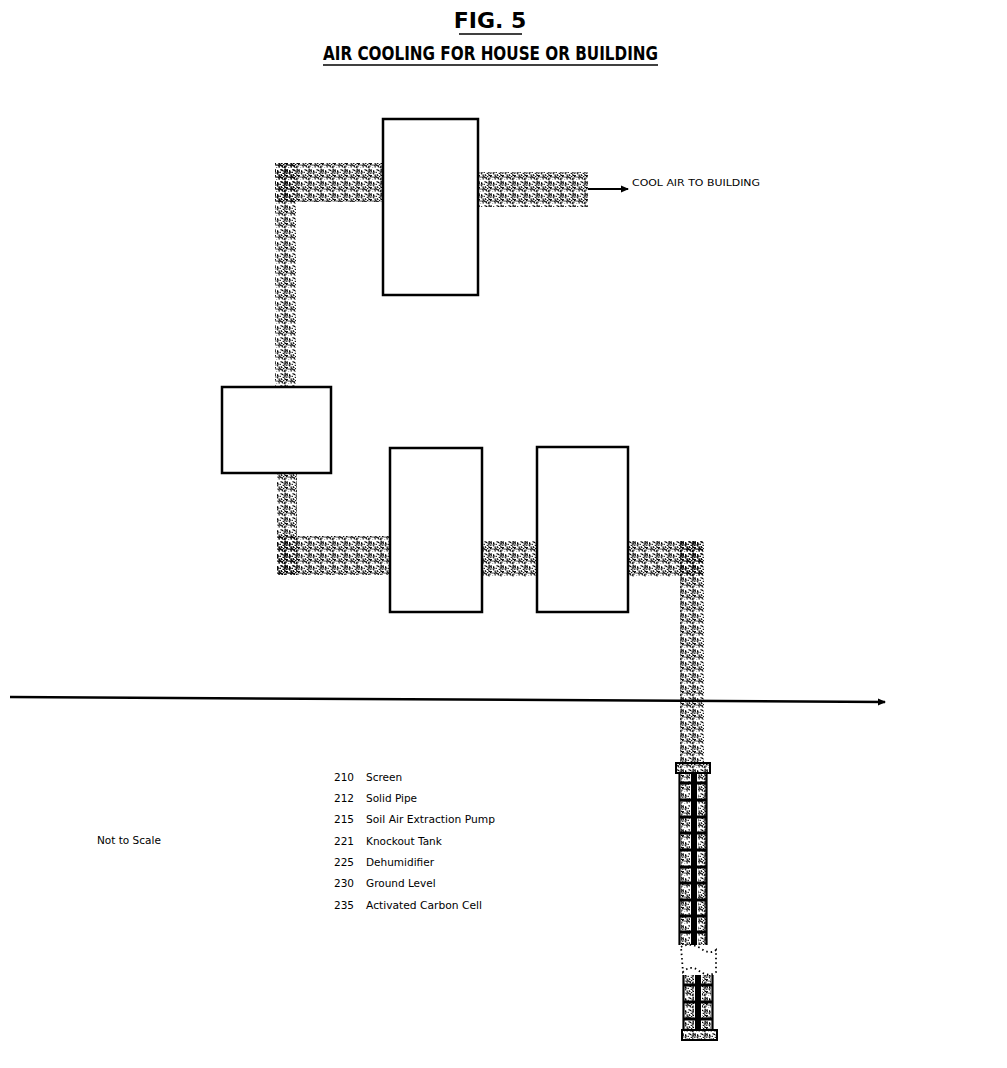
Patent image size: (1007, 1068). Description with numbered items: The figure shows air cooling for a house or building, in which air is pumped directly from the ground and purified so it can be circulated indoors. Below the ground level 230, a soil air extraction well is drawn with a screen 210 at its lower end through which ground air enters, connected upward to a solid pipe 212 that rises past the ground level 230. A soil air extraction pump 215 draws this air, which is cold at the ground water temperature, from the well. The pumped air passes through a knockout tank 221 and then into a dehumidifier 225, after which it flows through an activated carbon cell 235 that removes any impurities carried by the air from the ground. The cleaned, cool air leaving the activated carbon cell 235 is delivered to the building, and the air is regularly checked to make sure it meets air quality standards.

The screen 210 is at (679, 838).
The solid pipe 212 is at (678, 733).
The soil air extraction pump 215 is at (573, 620).
The knockout tank 221 is at (435, 617).
The dehumidifier 225 is at (255, 377).
The ground level 230 is at (218, 710).
The activated carbon cell 235 is at (382, 115).